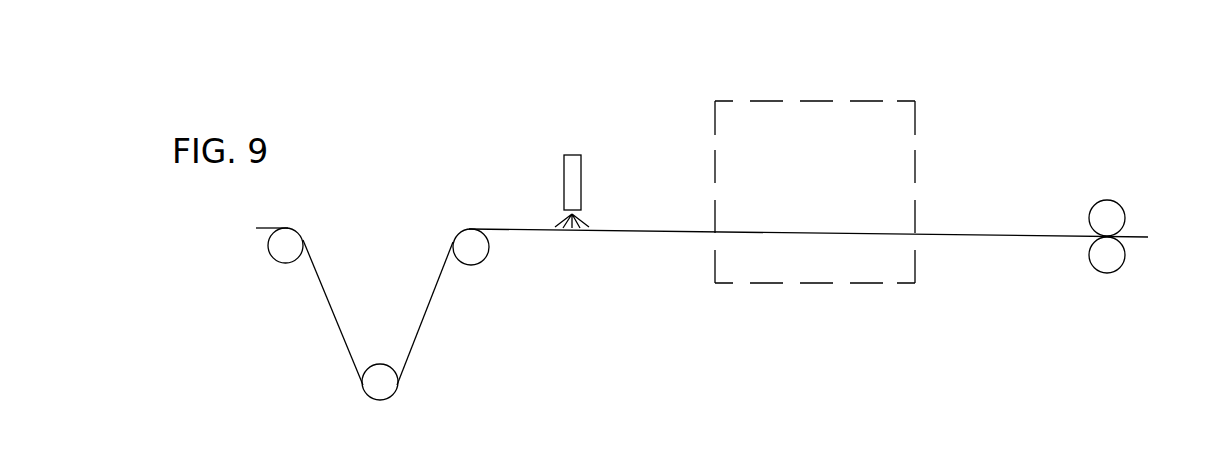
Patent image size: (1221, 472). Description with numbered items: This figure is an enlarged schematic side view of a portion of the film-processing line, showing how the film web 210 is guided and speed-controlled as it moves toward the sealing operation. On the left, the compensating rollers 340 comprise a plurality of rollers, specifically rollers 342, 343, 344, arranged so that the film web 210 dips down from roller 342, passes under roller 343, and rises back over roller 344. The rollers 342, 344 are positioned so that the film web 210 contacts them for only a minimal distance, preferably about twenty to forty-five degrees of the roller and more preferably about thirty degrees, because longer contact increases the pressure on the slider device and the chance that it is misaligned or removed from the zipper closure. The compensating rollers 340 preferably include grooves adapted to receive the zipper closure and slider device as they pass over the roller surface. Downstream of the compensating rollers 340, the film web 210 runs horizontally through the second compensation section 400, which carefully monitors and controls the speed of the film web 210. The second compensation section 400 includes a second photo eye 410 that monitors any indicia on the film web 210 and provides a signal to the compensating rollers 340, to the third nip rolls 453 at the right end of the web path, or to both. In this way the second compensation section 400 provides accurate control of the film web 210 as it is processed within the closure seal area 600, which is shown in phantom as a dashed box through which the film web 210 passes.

The compensating rollers 340 is at (382, 252).
The roller 342 is at (271, 259).
The roller 343 is at (394, 389).
The roller 344 is at (485, 258).
The second photo eye 410 is at (581, 155).
The second compensation section 400 is at (825, 76).
The closure seal area 600 is at (860, 101).
The film web 210 is at (1017, 237).
The third nip rolls 453 is at (1112, 200).